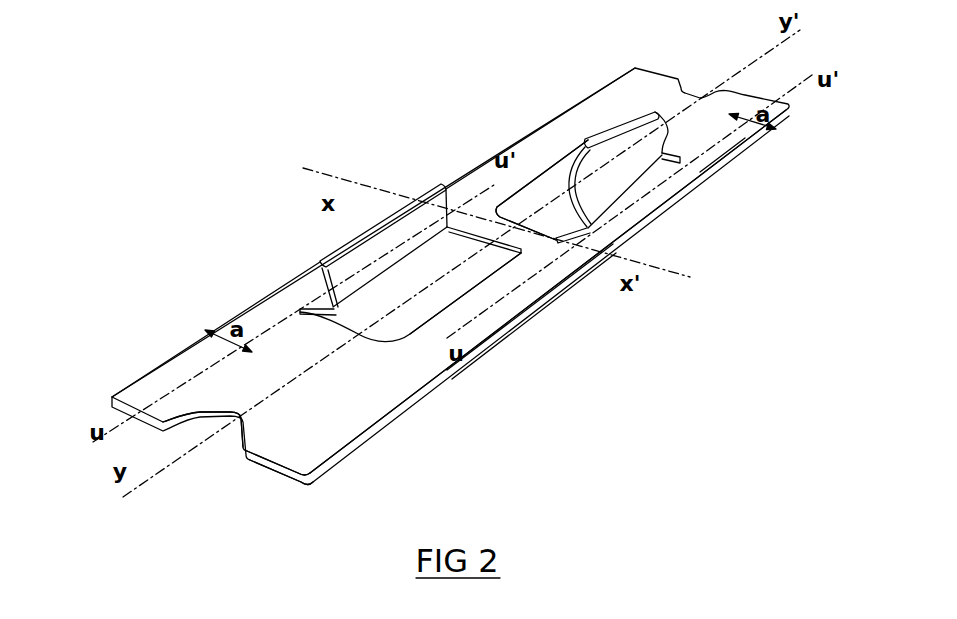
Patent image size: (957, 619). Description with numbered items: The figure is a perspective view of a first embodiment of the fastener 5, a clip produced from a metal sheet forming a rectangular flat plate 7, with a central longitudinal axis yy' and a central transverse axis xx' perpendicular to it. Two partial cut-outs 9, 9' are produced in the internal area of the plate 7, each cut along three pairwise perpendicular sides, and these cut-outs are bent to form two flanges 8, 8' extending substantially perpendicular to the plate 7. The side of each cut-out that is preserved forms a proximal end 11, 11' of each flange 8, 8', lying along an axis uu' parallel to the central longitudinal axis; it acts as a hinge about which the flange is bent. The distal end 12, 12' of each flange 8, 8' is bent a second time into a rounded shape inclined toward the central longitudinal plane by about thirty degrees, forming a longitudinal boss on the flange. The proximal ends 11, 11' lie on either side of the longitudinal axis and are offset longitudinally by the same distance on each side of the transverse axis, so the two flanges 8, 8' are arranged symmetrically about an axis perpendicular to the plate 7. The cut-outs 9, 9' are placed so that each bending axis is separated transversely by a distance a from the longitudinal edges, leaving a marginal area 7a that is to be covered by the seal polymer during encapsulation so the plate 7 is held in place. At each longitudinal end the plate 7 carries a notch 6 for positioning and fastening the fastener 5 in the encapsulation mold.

The fastener 5 is at (484, 148).
The notch 6 is at (238, 432).
The rectangular flat plate 7 is at (345, 400).
The marginal area 7a is at (178, 366).
The flange 8 is at (435, 343).
The flange 8' is at (704, 185).
The partial cut-out 9 is at (531, 311).
The partial cut-out 9' is at (542, 138).
The proximal end 11 is at (360, 284).
The proximal end 11' is at (612, 239).
The distal end 12 is at (365, 223).
The distal end 12' is at (644, 171).